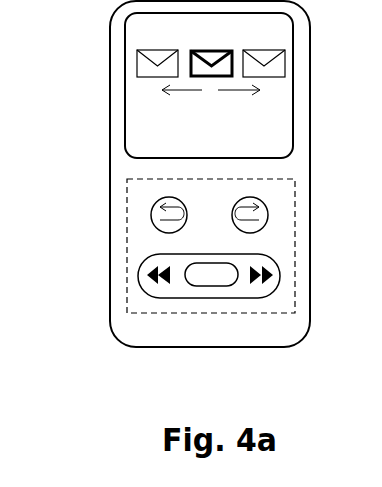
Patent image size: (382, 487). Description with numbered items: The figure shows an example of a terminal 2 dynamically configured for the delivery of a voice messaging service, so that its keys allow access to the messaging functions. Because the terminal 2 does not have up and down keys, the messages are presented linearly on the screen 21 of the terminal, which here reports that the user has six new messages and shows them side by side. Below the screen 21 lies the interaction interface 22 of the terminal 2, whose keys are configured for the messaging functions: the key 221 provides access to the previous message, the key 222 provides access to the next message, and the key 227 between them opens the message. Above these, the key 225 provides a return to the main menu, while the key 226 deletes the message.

The terminal 2 is at (115, 50).
The screen 21 is at (209, 85).
The interaction interface 22 is at (140, 250).
The key 225 is at (152, 213).
The key 226 is at (270, 217).
The key 221 is at (158, 284).
The key 227 is at (210, 287).
The key 222 is at (262, 284).